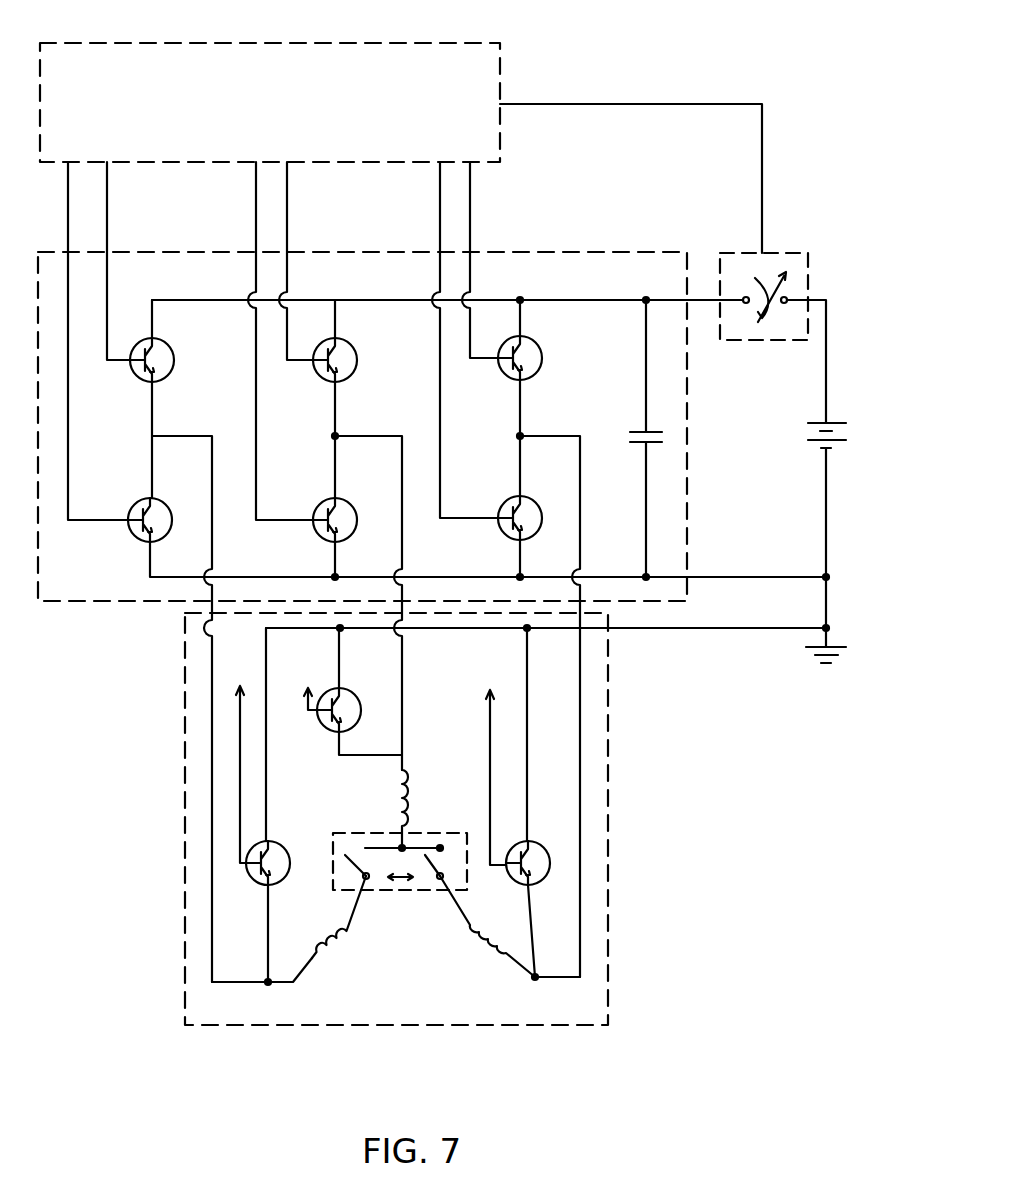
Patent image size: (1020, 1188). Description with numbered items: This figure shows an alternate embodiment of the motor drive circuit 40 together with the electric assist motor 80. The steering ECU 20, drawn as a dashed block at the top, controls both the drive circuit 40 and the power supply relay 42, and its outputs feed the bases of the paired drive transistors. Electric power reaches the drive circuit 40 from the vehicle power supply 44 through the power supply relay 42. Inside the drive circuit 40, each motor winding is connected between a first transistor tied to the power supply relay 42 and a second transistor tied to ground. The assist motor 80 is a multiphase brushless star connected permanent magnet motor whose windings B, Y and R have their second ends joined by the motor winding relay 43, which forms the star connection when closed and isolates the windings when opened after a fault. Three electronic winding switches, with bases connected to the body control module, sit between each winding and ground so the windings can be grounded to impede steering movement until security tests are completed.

The steering ECU 20 is at (458, 44).
The motor drive circuit 40 is at (572, 250).
The power supply relay 42 is at (786, 254).
The motor winding relay 43 is at (384, 895).
The vehicle power supply 44 is at (801, 459).
The electric assist motor 80 is at (505, 819).